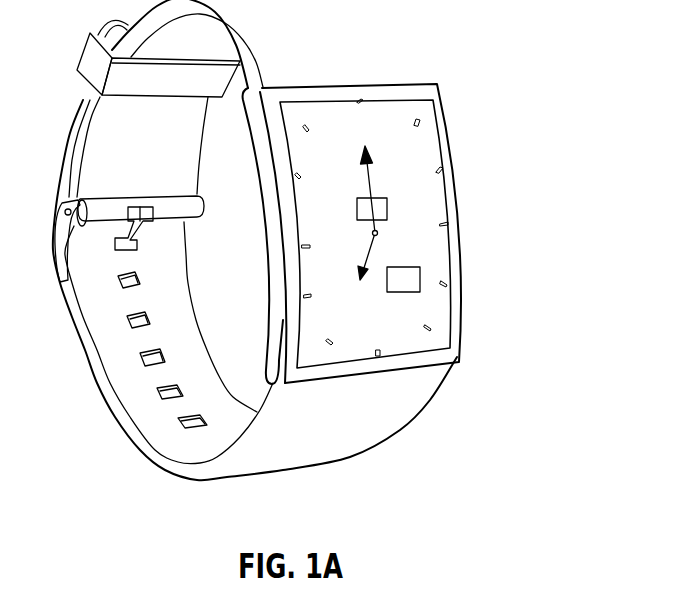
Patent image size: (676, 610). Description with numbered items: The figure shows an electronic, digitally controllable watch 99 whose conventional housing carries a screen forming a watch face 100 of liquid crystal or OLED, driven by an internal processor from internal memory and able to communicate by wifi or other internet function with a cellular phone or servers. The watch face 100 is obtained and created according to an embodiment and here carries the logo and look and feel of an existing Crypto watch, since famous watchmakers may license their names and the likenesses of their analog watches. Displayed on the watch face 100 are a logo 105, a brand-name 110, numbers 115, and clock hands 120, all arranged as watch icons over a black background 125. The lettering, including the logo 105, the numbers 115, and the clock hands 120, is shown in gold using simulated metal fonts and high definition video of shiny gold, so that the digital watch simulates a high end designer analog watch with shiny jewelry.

The watch 99 is at (408, 22).
The watch face 100 is at (302, 117).
The logo 105 is at (390, 208).
The brand-name 110 is at (412, 255).
The numbers 115 is at (347, 325).
The clock hands 120 is at (350, 266).
The black background 125 is at (440, 309).